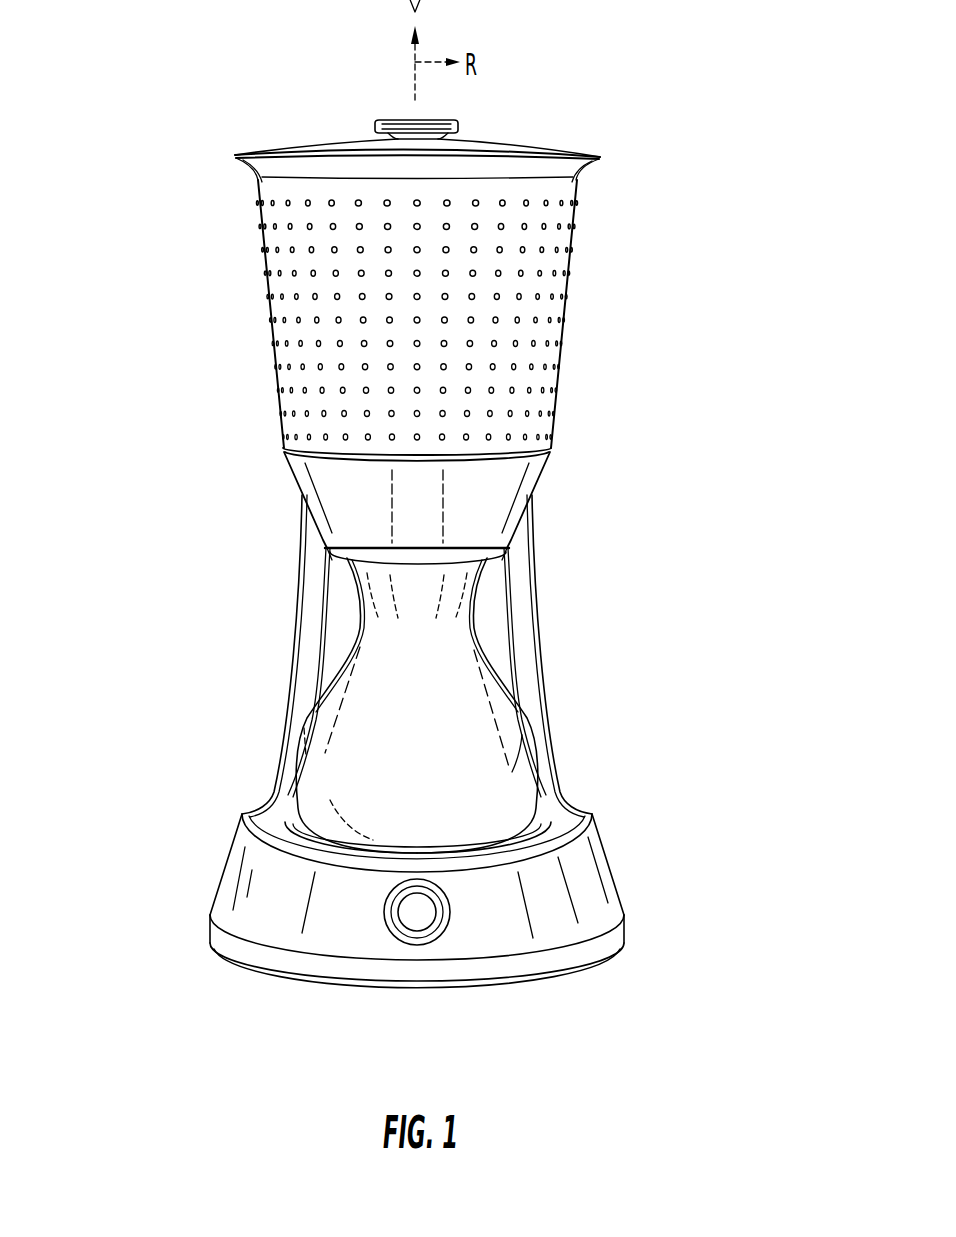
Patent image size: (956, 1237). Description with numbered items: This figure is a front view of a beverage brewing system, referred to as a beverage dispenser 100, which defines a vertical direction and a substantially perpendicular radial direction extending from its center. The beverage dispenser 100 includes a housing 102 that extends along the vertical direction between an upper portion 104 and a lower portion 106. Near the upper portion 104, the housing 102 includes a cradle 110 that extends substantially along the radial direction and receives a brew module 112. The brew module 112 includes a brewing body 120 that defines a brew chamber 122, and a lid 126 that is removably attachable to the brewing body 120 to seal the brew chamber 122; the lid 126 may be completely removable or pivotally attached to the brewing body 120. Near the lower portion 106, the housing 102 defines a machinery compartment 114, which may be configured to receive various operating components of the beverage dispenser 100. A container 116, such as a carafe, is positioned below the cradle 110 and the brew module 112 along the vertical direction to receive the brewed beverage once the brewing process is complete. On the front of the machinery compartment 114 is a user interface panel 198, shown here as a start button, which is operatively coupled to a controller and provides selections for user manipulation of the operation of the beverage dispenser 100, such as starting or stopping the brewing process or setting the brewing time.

The beverage dispenser 100 is at (730, 127).
The housing 102 is at (538, 607).
The upper portion 104 is at (559, 152).
The lower portion 106 is at (565, 988).
The cradle 110 is at (505, 495).
The brew module 112 is at (533, 327).
The machinery compartment 114 is at (588, 890).
The container 116 is at (315, 722).
The brewing body 120 is at (282, 413).
The brew chamber 122 is at (397, 315).
The lid 126 is at (348, 143).
The user interface panel 198 is at (412, 927).